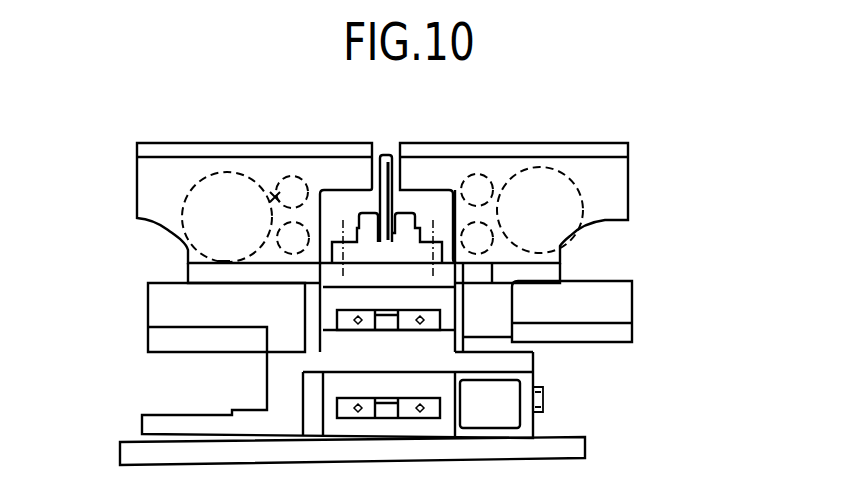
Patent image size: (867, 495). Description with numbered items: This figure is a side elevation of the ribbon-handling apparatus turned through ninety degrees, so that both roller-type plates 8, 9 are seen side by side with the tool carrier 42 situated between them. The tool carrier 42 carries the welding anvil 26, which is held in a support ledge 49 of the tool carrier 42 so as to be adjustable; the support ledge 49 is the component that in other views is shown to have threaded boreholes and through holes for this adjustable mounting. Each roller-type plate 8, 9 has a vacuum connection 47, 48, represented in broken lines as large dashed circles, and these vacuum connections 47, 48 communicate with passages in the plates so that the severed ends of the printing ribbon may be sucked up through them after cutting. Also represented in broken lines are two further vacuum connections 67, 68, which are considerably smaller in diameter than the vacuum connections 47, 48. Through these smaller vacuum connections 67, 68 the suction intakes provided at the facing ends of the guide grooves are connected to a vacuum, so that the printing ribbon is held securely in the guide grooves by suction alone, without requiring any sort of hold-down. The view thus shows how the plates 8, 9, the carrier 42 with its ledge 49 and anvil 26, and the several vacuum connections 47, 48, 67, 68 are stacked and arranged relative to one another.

The roller-type plate 8 is at (152, 170).
The roller-type plate 9 is at (585, 168).
The welding anvil 26 is at (386, 158).
The tool carrier 42 is at (390, 278).
The vacuum connection 47 is at (577, 192).
The vacuum connection 48 is at (182, 207).
The support ledge 49 is at (408, 255).
The vacuum connection 67 is at (258, 207).
The vacuum connection 68 is at (565, 265).